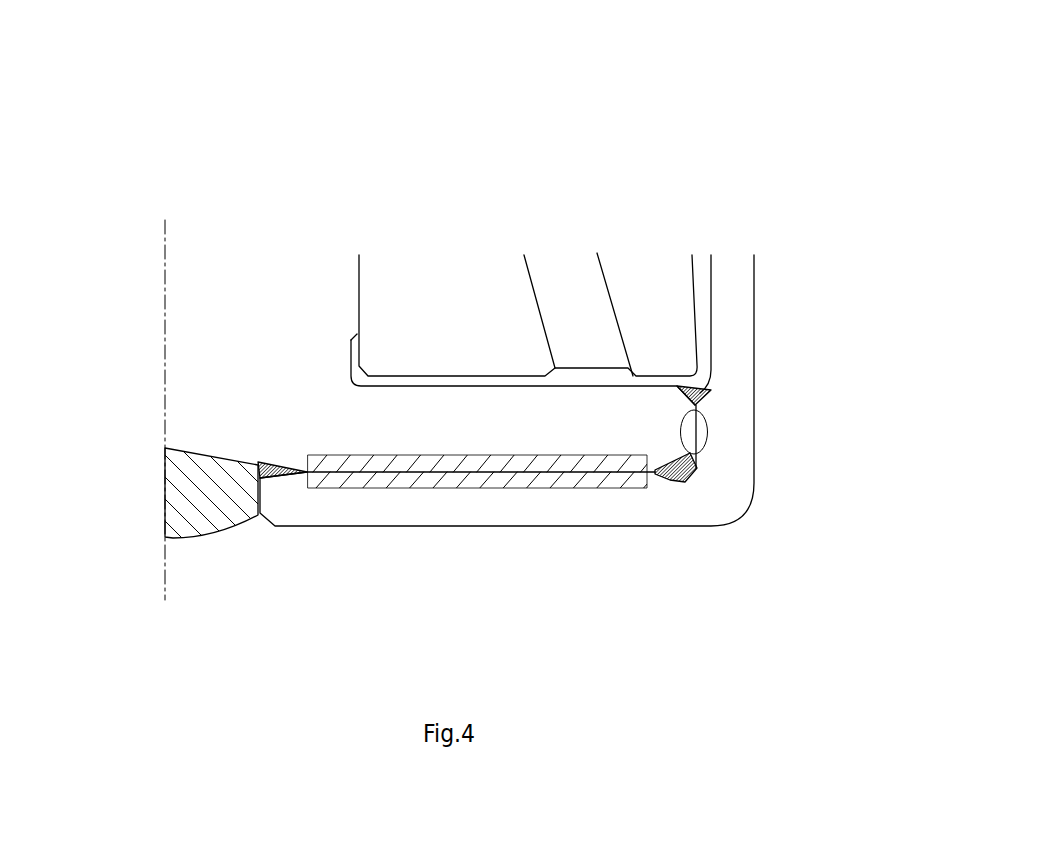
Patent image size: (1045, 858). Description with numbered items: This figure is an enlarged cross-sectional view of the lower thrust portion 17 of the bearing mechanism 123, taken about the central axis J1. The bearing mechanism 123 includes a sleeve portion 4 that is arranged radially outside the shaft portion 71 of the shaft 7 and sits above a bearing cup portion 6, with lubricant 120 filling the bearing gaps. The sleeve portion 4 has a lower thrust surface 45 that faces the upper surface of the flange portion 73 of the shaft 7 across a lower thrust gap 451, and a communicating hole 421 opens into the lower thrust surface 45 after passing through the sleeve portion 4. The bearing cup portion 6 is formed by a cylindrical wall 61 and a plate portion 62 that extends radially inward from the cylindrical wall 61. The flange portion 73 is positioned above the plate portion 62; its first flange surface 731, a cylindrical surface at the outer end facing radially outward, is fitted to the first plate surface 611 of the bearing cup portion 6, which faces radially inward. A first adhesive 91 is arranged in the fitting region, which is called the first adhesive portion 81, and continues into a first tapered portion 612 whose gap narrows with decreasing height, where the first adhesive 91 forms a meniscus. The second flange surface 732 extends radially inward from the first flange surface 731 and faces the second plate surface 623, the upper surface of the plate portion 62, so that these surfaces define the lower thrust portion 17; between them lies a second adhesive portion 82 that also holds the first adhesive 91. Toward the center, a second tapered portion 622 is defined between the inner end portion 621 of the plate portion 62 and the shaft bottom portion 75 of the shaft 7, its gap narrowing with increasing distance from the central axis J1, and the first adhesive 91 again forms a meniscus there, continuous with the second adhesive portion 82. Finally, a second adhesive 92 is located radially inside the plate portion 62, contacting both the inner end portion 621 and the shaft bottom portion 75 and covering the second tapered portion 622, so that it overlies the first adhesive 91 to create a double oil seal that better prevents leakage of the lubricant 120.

The bearing mechanism 123 is at (322, 92).
The shaft 7 is at (183, 156).
The shaft portion 71 is at (230, 272).
The shaft bottom portion 75 is at (218, 455).
The second adhesive 92 is at (193, 507).
The central axis J1 is at (162, 429).
The sleeve portion 4 is at (502, 308).
The lower thrust surface 45 is at (523, 373).
The lower thrust gap 451 is at (585, 385).
The communicating hole 421 is at (577, 308).
The lubricant 120 is at (703, 290).
The bearing cup portion 6 is at (600, 446).
The cylindrical wall 61 is at (732, 313).
The first plate surface 611 is at (697, 429).
The first tapered portion 612 is at (700, 394).
The first adhesive portion 81 is at (692, 445).
The plate portion 62 is at (507, 502).
The inner end portion 621 is at (263, 483).
The second tapered portion 622 is at (276, 482).
The second plate surface 623 is at (535, 478).
The lower thrust portion 17 is at (398, 428).
The flange portion 73 is at (472, 425).
The first flange surface 731 is at (688, 437).
The second flange surface 732 is at (410, 467).
The second adhesive portion 82 is at (573, 477).
The first adhesive 91 is at (268, 481).